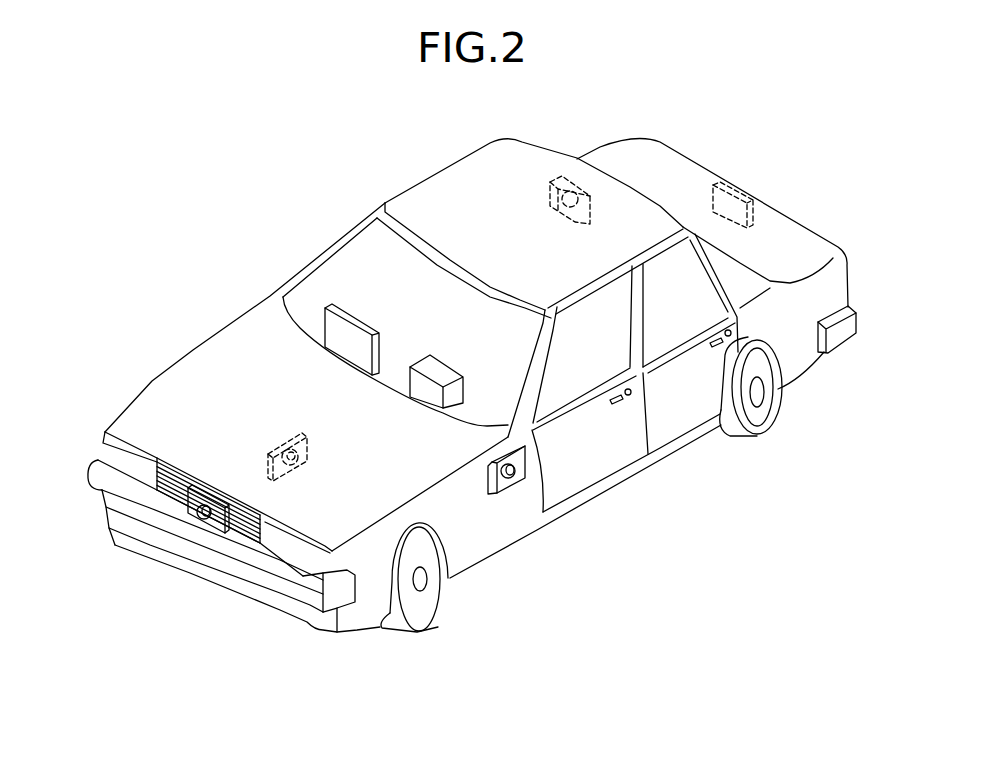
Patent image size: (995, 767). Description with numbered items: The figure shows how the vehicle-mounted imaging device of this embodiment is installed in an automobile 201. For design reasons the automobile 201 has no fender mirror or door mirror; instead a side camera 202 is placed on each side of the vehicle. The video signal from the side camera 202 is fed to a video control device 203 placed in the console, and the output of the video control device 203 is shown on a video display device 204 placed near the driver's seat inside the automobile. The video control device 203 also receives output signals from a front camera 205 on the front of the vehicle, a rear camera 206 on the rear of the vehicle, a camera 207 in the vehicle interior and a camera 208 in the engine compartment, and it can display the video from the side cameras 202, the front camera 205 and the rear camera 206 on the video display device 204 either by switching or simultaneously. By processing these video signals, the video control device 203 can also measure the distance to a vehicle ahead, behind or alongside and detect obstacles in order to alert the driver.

The automobile 201 is at (197, 376).
The side camera 202 is at (503, 483).
The video control device 203 is at (452, 403).
The video display device 204 is at (337, 335).
The front camera 205 is at (197, 513).
The rear camera 206 is at (752, 190).
The camera in the interior of the vehicle 207 is at (553, 193).
The camera in the engine compartment 208 is at (282, 483).